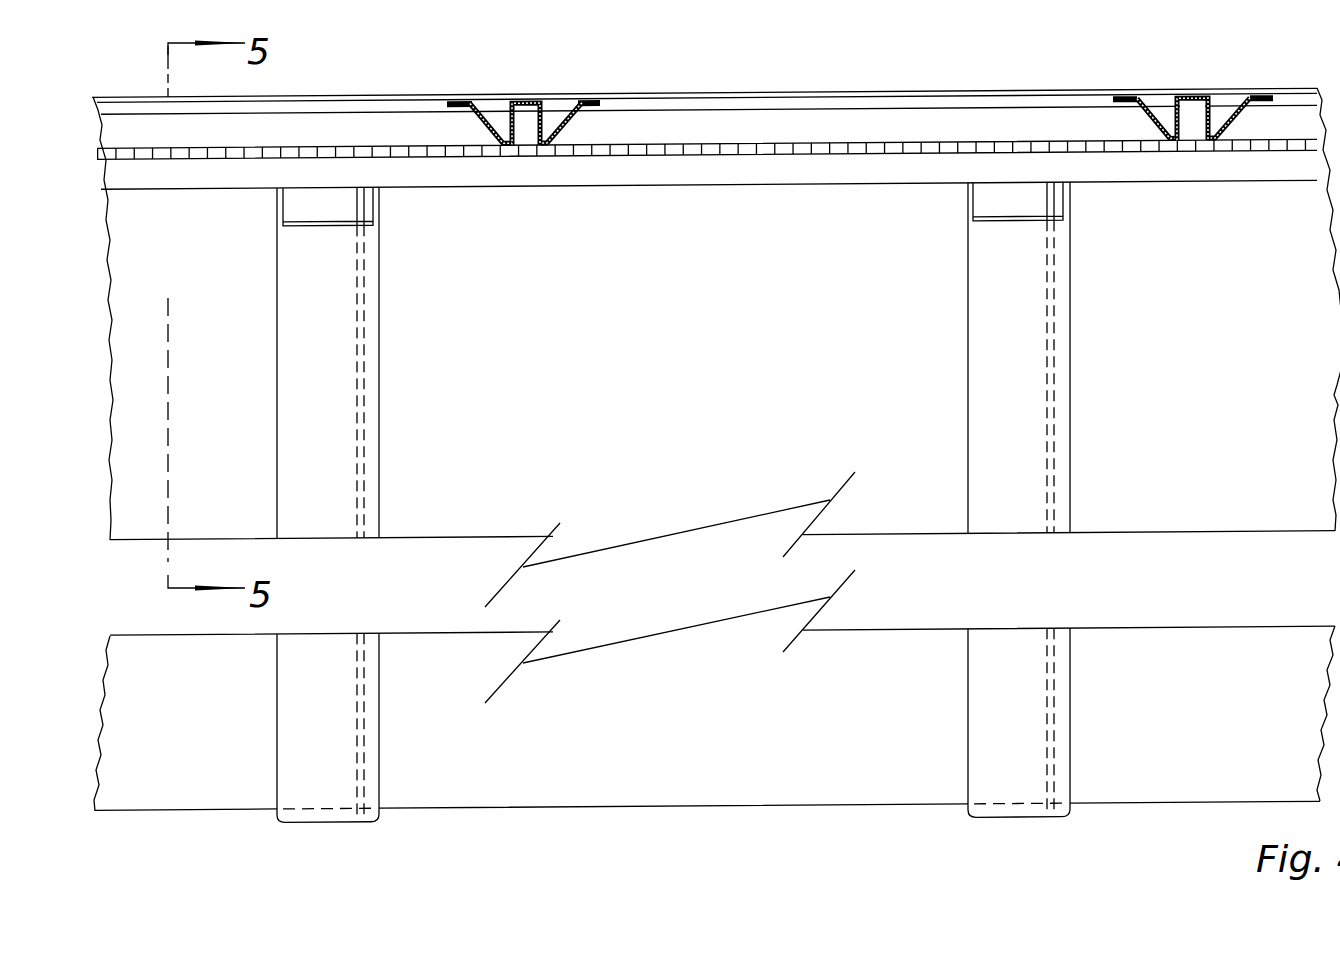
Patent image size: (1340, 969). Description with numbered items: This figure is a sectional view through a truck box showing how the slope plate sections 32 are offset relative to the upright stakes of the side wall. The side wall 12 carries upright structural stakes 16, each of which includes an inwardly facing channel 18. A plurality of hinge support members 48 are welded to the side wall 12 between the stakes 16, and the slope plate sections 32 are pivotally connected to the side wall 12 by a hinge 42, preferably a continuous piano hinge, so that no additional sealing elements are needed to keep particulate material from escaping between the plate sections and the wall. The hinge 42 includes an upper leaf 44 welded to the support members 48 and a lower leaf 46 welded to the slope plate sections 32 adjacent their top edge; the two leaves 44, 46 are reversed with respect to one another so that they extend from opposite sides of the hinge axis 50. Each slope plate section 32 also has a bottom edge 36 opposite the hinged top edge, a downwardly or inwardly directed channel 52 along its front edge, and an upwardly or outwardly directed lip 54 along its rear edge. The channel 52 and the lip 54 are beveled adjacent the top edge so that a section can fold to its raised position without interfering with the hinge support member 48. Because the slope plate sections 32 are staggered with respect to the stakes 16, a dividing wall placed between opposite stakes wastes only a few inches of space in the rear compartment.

The side wall 12 is at (1090, 93).
The structural stake 16 is at (1193, 93).
The channel 18 is at (1193, 120).
The slope plate section 32 is at (238, 783).
The bottom edge 36 is at (955, 805).
The hinge 42 is at (998, 107).
The upper leaf 44 is at (892, 132).
The lower leaf 46 is at (984, 167).
The hinge support member 48 is at (710, 102).
The hinge axis 50 is at (684, 147).
The channel 52 is at (318, 465).
The lip 54 is at (363, 379).